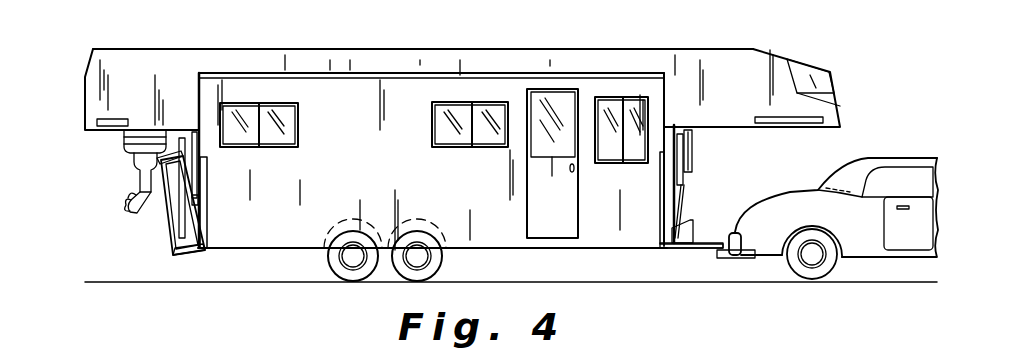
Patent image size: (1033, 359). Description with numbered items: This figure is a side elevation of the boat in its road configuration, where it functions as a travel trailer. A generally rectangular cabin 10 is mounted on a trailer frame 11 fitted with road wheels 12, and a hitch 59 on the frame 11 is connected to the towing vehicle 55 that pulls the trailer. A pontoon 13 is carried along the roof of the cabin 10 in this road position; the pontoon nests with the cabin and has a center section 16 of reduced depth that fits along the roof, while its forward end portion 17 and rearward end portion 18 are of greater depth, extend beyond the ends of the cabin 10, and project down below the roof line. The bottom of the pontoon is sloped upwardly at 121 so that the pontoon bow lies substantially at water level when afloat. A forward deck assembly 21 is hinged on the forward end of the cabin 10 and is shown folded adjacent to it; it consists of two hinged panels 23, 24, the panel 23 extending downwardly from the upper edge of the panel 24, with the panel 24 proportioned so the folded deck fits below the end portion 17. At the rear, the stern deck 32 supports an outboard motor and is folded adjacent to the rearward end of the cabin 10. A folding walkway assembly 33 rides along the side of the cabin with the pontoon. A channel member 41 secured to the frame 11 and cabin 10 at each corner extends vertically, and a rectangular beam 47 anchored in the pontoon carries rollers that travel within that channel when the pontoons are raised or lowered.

The cabin 10 is at (258, 254).
The trailer frame 11 is at (683, 248).
The road wheels 12 is at (405, 270).
The pontoon 13 is at (662, 53).
The center section 16 is at (442, 58).
The forward end portion 17 is at (770, 60).
The rearward end portion 18 is at (143, 67).
The forward deck assembly 21 is at (690, 172).
The panel 23 is at (692, 152).
The panel 24 is at (682, 197).
The stern deck 32 is at (188, 210).
The folding walkway assembly 33 is at (320, 75).
The channel member 41 is at (205, 215).
The rectangular beam 47 is at (200, 147).
The towing vehicle 55 is at (895, 160).
The hitch 59 is at (724, 258).
The upwardly sloped pontoon bottom 121 is at (808, 63).